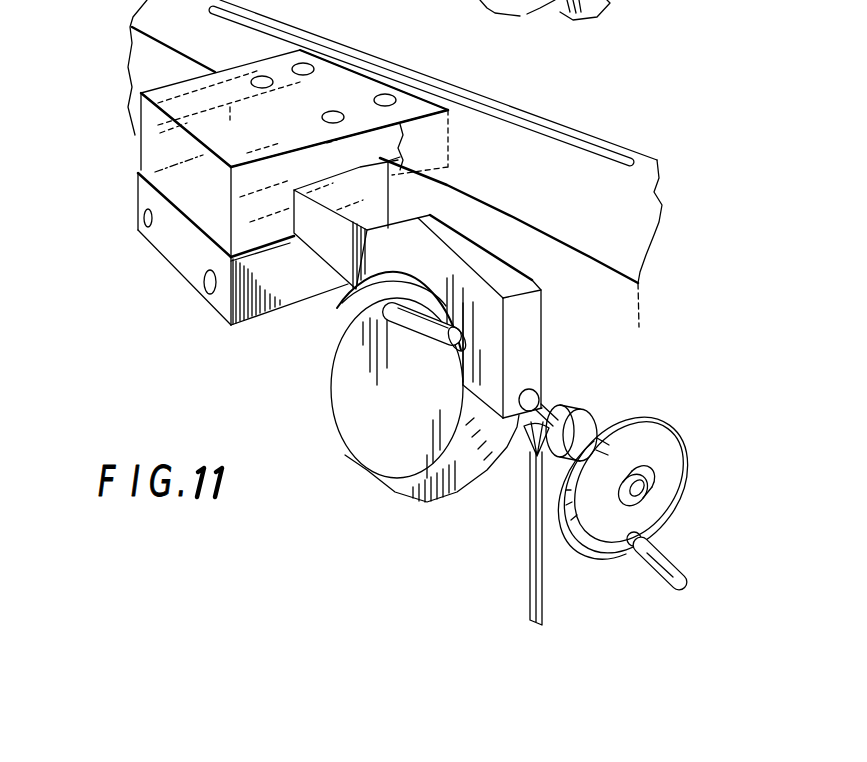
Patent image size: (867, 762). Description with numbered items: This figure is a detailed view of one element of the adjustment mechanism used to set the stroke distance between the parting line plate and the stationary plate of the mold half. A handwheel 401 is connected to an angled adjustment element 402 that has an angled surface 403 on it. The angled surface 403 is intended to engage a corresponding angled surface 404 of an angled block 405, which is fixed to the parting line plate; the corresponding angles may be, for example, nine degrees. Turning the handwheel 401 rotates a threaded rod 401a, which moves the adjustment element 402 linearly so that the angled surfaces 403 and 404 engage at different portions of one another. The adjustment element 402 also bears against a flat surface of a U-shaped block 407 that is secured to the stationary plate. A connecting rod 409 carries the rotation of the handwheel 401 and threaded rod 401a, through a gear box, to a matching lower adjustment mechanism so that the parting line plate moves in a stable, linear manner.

The handwheel 401 is at (673, 437).
The threaded rod 401a is at (548, 400).
The angled element 402 is at (511, 283).
The angled surface 403 is at (200, 103).
The angled surface 404 is at (388, 187).
The angled block 405 is at (157, 205).
The U-shaped block 407 is at (348, 90).
The connecting rod 409 is at (528, 578).